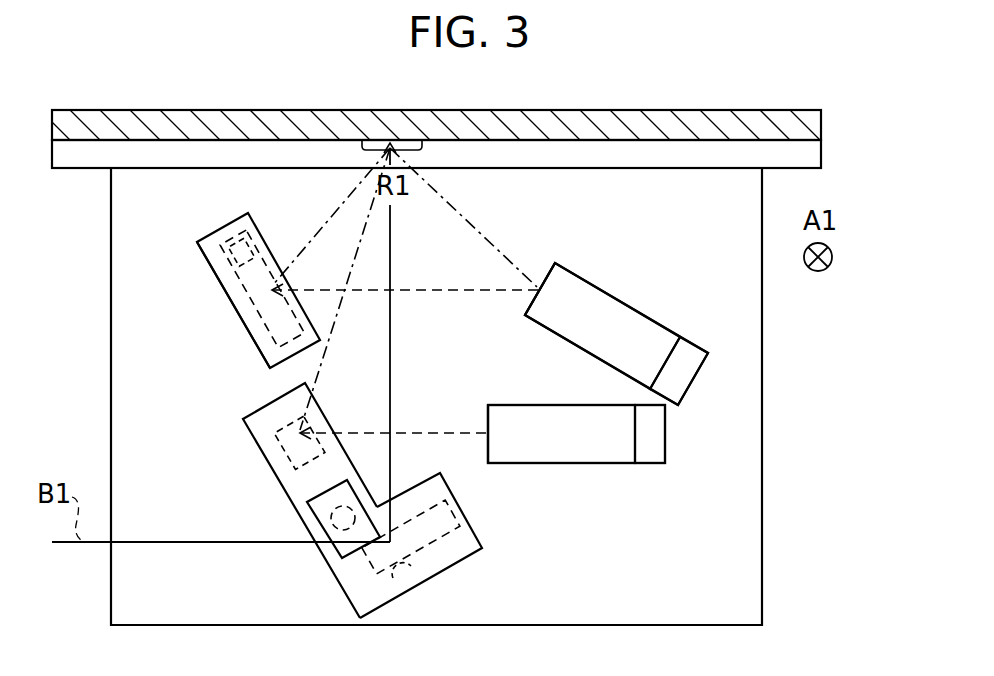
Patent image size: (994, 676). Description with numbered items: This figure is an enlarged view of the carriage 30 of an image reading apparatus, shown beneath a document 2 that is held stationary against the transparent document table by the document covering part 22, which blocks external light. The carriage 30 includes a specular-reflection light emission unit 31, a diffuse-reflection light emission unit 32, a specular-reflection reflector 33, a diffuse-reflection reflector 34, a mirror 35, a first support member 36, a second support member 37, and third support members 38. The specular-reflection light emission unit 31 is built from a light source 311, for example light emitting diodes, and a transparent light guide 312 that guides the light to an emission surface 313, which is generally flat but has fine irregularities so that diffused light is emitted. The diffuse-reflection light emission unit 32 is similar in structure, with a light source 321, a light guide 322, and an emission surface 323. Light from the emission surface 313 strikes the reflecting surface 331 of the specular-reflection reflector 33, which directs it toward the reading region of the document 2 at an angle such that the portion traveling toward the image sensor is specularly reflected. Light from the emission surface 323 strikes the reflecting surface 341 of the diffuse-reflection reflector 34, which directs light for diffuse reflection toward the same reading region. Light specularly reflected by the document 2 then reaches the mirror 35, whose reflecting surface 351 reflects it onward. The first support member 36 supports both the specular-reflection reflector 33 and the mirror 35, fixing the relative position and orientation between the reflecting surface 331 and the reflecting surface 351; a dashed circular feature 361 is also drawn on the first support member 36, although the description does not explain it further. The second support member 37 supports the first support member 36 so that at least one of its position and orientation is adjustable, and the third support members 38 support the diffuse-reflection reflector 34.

The document 2 is at (822, 127).
The document covering part 22 is at (822, 152).
The carriage 30 is at (762, 368).
The specular-reflection light emission unit 31 is at (727, 538).
The light source 311 is at (650, 464).
The light guide 312 is at (593, 464).
The emission surface 313 is at (488, 414).
The diffuse-reflection light emission unit 32 is at (625, 301).
The light source 321 is at (686, 339).
The light guide 322 is at (593, 285).
The emission surface 323 is at (552, 266).
The specular-reflection reflector 33 is at (290, 452).
The reflecting surface 331 is at (283, 394).
The diffuse-reflection reflector 34 is at (240, 322).
The reflecting surface 341 is at (232, 220).
The mirror 35 is at (410, 587).
The reflecting surface 351 is at (338, 566).
The first support member 36 is at (466, 516).
The lens 361 is at (322, 518).
The second support member 37 is at (346, 570).
The third support members 38 is at (208, 262).